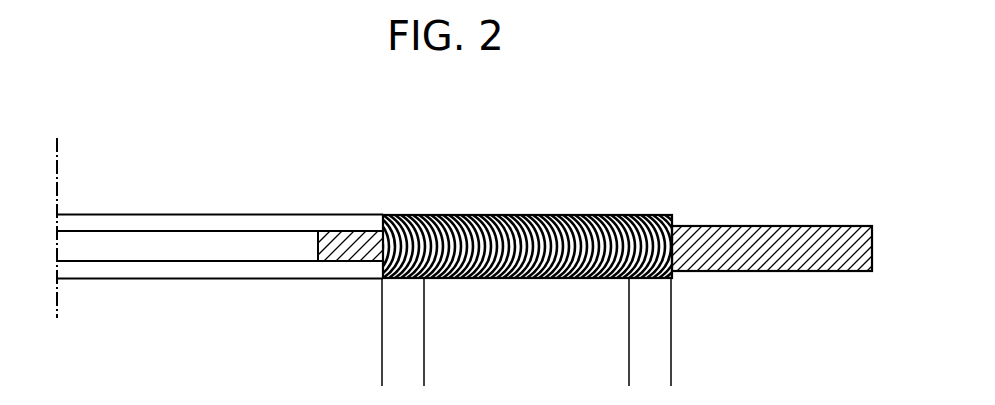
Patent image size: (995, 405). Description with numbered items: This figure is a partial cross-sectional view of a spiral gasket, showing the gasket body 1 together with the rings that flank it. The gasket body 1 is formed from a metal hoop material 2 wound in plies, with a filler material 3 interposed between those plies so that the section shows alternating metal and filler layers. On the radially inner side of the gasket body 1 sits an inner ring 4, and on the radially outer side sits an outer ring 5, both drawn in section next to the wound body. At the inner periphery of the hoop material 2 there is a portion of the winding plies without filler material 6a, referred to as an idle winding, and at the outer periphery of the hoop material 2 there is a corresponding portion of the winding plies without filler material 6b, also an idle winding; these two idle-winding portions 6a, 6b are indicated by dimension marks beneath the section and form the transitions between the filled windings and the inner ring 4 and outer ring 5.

The gasket body 1 is at (514, 199).
The metal hoop material 2 is at (618, 214).
The filler material 3 is at (460, 214).
The inner ring 4 is at (352, 230).
The outer ring 5 is at (768, 233).
The portion of the winding plies without filler material at the inner periphery 6a is at (466, 371).
The portion of the winding plies without filler material at the outer periphery 6b is at (600, 371).